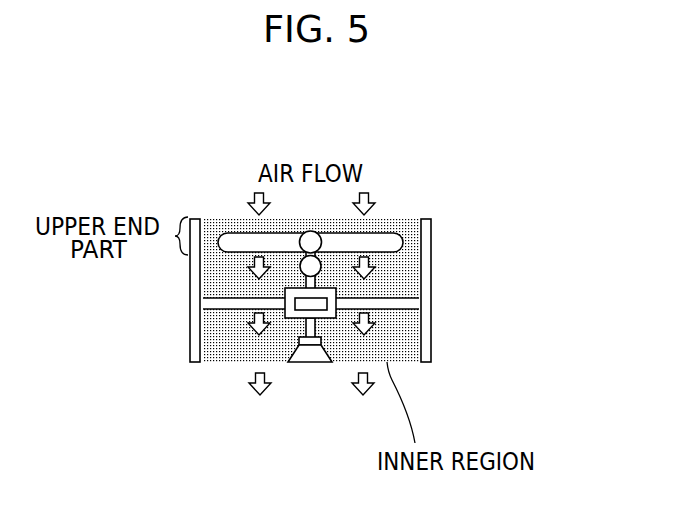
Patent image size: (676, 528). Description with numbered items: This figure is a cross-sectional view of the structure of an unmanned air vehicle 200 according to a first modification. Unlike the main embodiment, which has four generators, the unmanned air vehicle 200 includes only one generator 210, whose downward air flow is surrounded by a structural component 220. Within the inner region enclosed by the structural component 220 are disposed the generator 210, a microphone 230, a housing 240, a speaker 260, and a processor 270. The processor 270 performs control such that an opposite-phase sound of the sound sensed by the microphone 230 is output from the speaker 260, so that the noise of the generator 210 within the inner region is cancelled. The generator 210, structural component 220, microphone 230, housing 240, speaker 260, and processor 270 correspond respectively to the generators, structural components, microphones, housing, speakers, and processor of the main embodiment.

The unmanned air vehicle 200 is at (325, 281).
The generator 210 is at (393, 233).
The structural component 220 is at (195, 363).
The microphone 230 is at (300, 266).
The housing 240 is at (337, 300).
The speaker 260 is at (308, 362).
The processor 270 is at (301, 316).